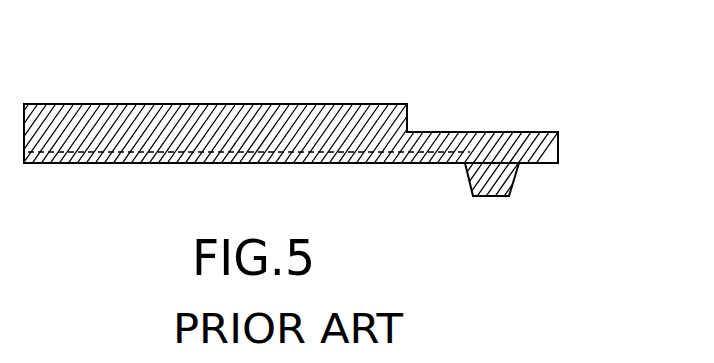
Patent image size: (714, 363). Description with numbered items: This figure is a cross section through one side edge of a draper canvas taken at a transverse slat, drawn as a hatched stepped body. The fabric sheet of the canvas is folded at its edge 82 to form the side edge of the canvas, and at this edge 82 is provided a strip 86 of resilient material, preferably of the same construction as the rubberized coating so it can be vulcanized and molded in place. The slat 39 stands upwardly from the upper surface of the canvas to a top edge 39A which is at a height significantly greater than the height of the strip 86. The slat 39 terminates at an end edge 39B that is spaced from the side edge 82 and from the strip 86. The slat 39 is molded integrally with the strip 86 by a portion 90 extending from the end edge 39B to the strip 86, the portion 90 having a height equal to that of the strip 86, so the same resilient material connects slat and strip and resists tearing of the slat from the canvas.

The slat 39 is at (287, 108).
The top edge of slat 39A is at (175, 103).
The end edge of slat 39B is at (445, 30).
The portion 90 is at (437, 131).
The strip 86 is at (545, 131).
The edge 82 is at (560, 152).